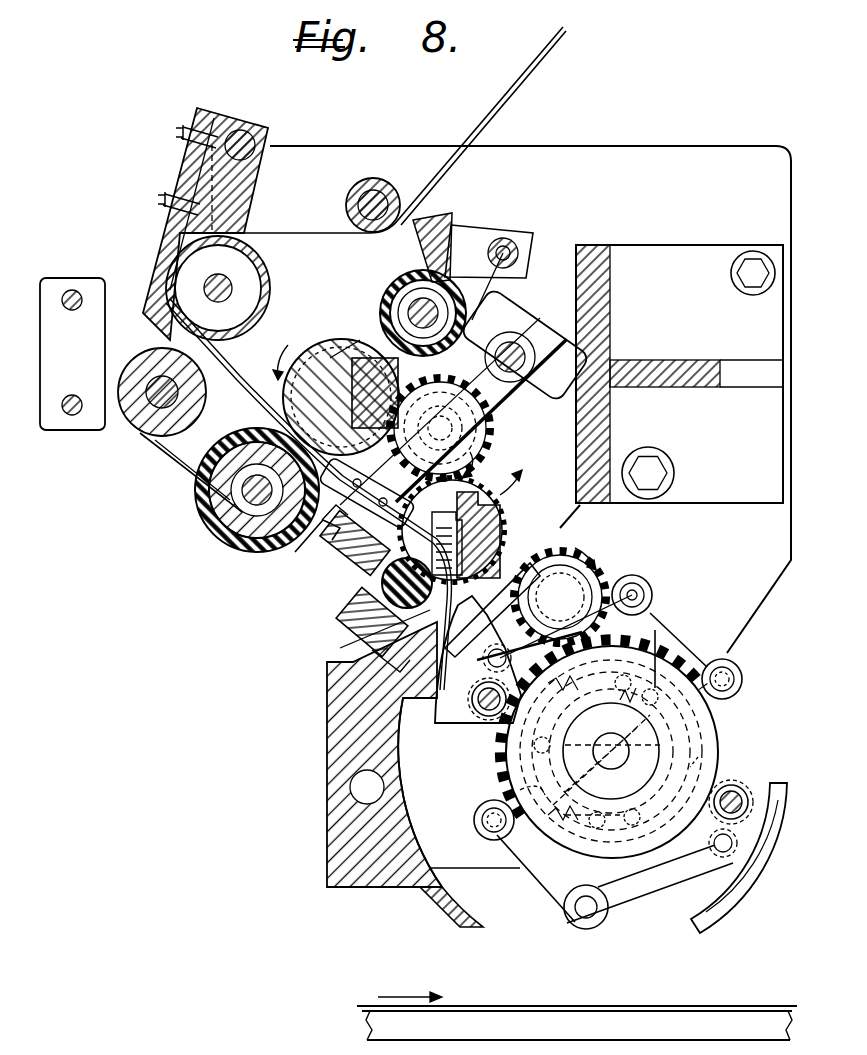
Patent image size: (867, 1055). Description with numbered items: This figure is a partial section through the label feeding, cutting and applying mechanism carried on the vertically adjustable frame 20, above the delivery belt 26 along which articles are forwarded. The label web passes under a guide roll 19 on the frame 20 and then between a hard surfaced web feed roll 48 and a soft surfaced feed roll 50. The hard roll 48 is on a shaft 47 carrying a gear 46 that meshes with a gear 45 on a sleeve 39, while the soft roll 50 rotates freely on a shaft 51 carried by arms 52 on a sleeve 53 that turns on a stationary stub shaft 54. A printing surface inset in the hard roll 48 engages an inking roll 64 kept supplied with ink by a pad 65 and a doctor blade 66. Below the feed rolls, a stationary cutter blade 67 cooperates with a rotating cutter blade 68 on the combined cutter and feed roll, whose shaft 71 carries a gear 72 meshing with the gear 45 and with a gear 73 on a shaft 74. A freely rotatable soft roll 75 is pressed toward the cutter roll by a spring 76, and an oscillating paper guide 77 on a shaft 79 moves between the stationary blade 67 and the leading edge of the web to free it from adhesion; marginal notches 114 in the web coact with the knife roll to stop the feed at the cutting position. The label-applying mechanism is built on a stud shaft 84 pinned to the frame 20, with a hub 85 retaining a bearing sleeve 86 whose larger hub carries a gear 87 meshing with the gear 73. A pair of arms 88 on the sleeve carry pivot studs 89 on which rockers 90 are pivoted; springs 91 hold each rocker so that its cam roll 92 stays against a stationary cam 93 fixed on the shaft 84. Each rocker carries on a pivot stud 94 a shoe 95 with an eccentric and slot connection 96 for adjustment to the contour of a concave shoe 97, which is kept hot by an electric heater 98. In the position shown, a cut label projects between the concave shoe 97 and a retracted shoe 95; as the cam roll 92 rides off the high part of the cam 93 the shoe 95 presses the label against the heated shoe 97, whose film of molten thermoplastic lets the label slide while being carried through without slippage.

The guide roll 19 is at (370, 191).
The frame 20 is at (658, 158).
The delivery belt 26 is at (545, 1006).
The sleeve 39 is at (493, 408).
The gear 45 is at (492, 444).
The gear 46 is at (312, 340).
The shaft 47 is at (360, 332).
The hard surfaced web feed roll 48 is at (290, 380).
The soft surfaced feed roll 50 is at (220, 536).
The shaft 51 is at (240, 495).
The arms 52 is at (183, 455).
The sleeve 53 is at (150, 432).
The stationary stub shaft 54 is at (160, 393).
The inking roll 64 is at (398, 286).
The pad 65 is at (438, 230).
The doctor blade 66 is at (505, 284).
The stationary cutter blade 67 is at (350, 565).
The cutter blade 68 is at (366, 493).
The shaft 71 is at (512, 565).
The gear 72 is at (505, 515).
The gear 73 is at (598, 552).
The shaft 74 is at (560, 597).
The soft roll 75 is at (380, 590).
The spring 76 is at (350, 624).
The oscillating paper guide 77 is at (298, 552).
The shaft 79 is at (520, 372).
The stud shaft 84 is at (625, 760).
The hub 85 is at (650, 742).
The bearing sleeve 86 is at (700, 765).
The gear 87 is at (518, 756).
The arms 88 is at (648, 645).
The pivot studs 89 is at (635, 597).
The rockers 90 is at (704, 650).
The springs 91 is at (615, 698).
The cam roll 92 is at (742, 673).
The stationary cam 93 is at (522, 790).
The pivot stud 94 is at (752, 900).
The shoe 95 is at (437, 718).
The eccentric and slot connection 96 is at (490, 718).
The concave shoe 97 is at (420, 855).
The electric heater 98 is at (360, 788).
The marginal notches 114 is at (247, 363).